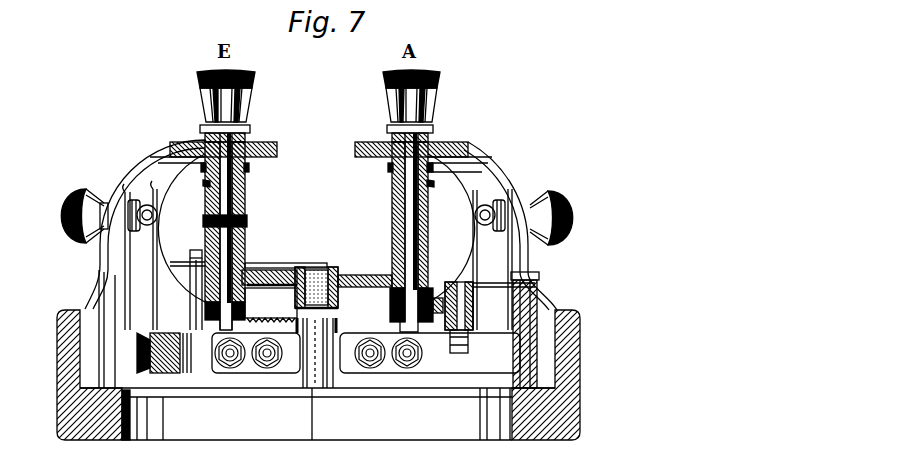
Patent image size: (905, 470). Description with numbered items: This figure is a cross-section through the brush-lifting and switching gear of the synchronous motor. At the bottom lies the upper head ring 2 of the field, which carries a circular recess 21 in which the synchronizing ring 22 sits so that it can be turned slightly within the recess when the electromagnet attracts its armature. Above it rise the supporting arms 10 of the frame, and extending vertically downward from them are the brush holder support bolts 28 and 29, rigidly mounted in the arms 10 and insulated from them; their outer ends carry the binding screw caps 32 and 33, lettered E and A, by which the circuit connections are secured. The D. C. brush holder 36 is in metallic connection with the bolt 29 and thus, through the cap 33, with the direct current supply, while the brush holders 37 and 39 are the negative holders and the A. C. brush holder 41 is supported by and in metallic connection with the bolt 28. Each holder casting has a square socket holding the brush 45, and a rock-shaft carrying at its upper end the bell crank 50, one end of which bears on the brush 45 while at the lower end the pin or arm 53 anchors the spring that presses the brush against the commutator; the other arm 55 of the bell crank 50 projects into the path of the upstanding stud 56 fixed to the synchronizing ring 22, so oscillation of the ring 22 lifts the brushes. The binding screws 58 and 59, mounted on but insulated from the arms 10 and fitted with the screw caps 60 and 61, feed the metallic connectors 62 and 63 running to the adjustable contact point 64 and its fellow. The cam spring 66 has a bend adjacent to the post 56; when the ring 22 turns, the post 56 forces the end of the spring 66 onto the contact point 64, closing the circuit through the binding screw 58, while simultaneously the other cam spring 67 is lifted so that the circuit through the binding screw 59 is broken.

The head ring 2 is at (62, 428).
The supporting arms 10 is at (130, 158).
The circular recess 21 is at (428, 397).
The ring 22 is at (347, 397).
The bolt 28 is at (246, 242).
The bolt 29 is at (400, 214).
The binding screw cap 32 is at (249, 106).
The binding screw cap 33 is at (388, 104).
The D. C. brush holder 36 is at (357, 277).
The D. C. brush holder 37 is at (434, 297).
The D. C. brush holder 39 is at (248, 307).
The A. C. brush holder 41 is at (250, 217).
The brush 45 is at (330, 272).
The bell crank 50 is at (278, 267).
The pin or arm 53 is at (474, 345).
The arm 55 is at (490, 289).
The upstanding stud 56 is at (190, 309).
The binding screw 58 is at (158, 213).
The binding screw 59 is at (477, 215).
The screw cap 60 is at (80, 194).
The screw cap 61 is at (571, 228).
The metallic connector 62 is at (140, 261).
The metallic connector 63 is at (492, 259).
The adjustable contact point 64 is at (137, 353).
The cam spring 66 is at (148, 352).
The cam spring 67 is at (366, 353).